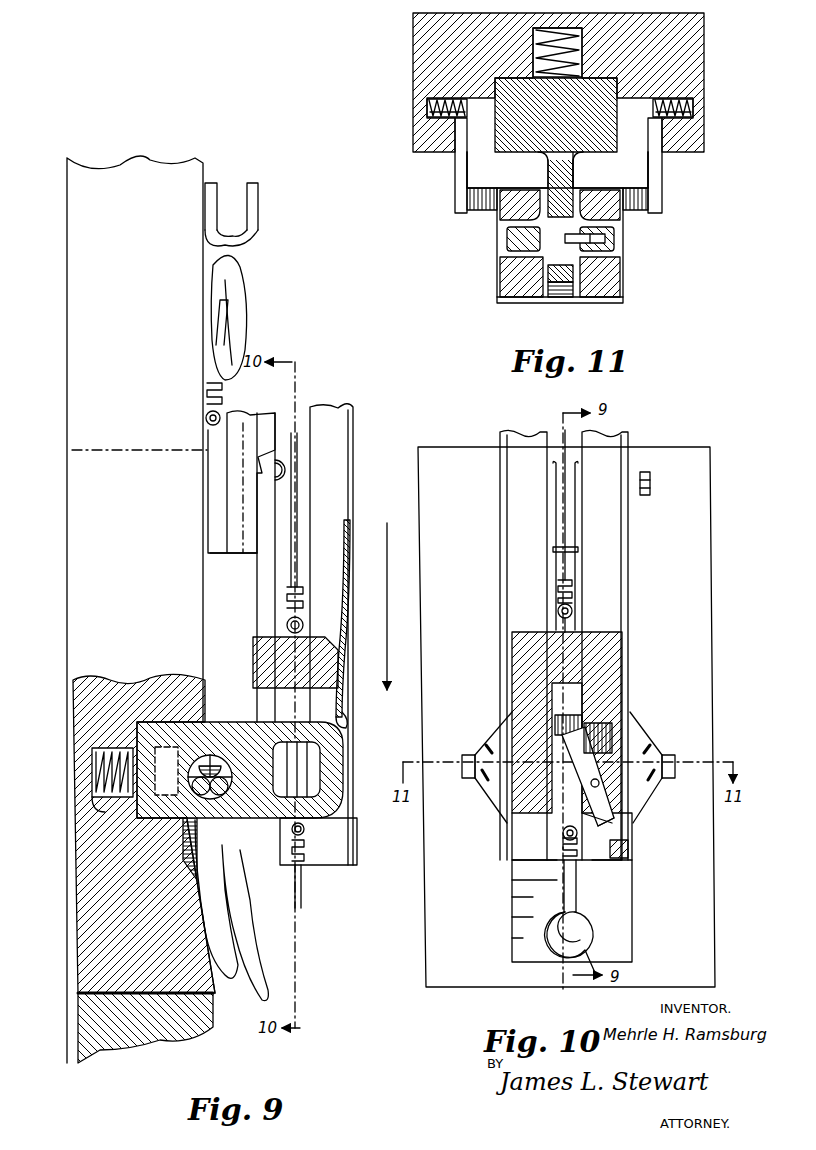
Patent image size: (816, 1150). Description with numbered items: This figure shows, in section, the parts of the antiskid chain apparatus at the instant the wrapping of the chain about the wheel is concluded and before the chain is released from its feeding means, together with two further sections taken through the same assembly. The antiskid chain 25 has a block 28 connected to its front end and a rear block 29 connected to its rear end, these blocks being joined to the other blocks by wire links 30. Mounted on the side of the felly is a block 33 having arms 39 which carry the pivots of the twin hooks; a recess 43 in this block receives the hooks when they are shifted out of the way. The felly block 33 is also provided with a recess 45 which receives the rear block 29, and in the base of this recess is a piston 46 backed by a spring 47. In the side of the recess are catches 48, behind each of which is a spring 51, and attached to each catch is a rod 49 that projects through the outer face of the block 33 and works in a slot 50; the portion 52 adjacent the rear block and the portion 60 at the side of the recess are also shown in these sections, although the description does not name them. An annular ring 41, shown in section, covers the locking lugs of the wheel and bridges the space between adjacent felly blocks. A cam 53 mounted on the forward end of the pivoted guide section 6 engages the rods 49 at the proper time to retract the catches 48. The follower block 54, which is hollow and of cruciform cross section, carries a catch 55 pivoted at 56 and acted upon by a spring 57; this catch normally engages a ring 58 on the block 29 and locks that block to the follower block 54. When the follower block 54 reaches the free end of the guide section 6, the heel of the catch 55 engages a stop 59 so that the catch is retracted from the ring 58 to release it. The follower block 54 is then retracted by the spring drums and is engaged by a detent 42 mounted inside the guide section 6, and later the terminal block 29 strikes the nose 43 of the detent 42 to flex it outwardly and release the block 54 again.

In FIG. 11, the guide section 6 is at (510, 282).
In FIG. 10, the guide section 6 is at (520, 596).
In FIG. 9, the guide section 6 is at (340, 497).
In FIG. 10, the antiskid chain 25 is at (586, 938).
In FIG. 9, the antiskid chain 25 is at (238, 300).
In FIG. 9, the terminal block 28 is at (230, 553).
In FIG. 11, the rear terminal block 29 is at (556, 165).
In FIG. 10, the rear terminal block 29 is at (555, 825).
In FIG. 9, the rear terminal block 29 is at (225, 720).
In FIG. 10, the wire link 30 is at (568, 520).
In FIG. 9, the wire link 30 is at (212, 300).
In FIG. 11, the felly block 33 is at (413, 52).
In FIG. 10, the felly block 33 is at (566, 717).
In FIG. 9, the felly block 33 is at (82, 963).
In FIG. 9, the arm 39 is at (270, 483).
In FIG. 9, the annular ring 41 is at (60, 1045).
In FIG. 9, the detent 42 is at (350, 640).
In FIG. 9, the nose 43 is at (346, 720).
In FIG. 9, the recess 45 is at (185, 837).
In FIG. 9, the piston 46 is at (88, 810).
In FIG. 9, the spring 47 is at (90, 787).
In FIG. 11, the catch 48 is at (470, 98).
In FIG. 11, the rod 49 is at (459, 200).
In FIG. 10, the rod 49 is at (470, 785).
In FIG. 11, the slot 50 is at (474, 152).
In FIG. 10, the slot 50 is at (463, 755).
In FIG. 11, the spring 51 is at (432, 113).
In FIG. 11, the shoulder 52 is at (628, 100).
In FIG. 11, the cam 53 is at (480, 205).
In FIG. 10, the cam 53 is at (490, 735).
In FIG. 11, the follower block 54 is at (564, 246).
In FIG. 10, the follower block 54 is at (604, 658).
In FIG. 9, the follower block 54 is at (315, 650).
In FIG. 11, the catch 55 is at (585, 248).
In FIG. 10, the catch 55 is at (612, 826).
In FIG. 9, the catch 55 is at (300, 765).
In FIG. 10, the pivot 56 is at (617, 815).
In FIG. 10, the spring 57 is at (616, 738).
In FIG. 10, the ring 58 is at (560, 735).
In FIG. 9, the ring 58 is at (330, 808).
In FIG. 10, the stop 59 is at (633, 865).
In FIG. 9, the inclined face 60 is at (197, 883).